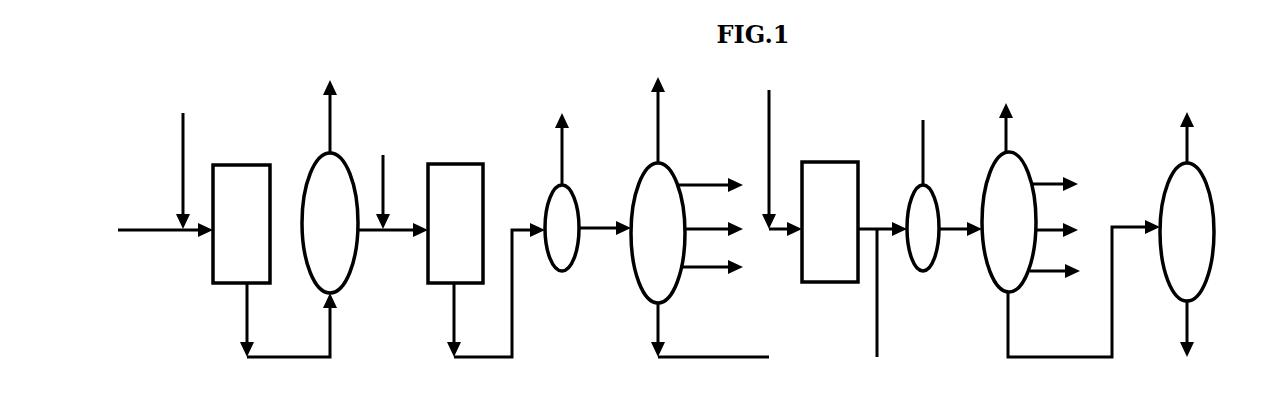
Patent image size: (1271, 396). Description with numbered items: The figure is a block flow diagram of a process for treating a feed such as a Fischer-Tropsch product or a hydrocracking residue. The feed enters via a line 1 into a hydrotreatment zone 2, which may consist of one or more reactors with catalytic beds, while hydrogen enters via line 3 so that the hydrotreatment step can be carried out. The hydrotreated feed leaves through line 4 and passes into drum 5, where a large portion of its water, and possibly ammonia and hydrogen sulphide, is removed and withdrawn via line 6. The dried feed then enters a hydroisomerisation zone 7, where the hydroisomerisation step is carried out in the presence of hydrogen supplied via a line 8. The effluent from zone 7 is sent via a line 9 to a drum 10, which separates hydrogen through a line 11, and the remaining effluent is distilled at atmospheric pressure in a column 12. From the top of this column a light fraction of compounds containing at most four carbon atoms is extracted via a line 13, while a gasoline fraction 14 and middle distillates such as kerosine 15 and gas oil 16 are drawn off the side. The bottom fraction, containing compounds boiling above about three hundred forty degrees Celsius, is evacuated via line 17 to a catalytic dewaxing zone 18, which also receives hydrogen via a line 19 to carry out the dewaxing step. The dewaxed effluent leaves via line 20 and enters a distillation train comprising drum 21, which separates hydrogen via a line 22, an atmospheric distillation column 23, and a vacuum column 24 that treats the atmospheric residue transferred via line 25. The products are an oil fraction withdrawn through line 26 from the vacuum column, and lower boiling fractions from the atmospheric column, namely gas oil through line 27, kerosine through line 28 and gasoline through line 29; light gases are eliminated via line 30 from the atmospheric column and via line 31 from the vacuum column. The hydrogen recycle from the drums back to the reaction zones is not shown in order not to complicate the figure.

The line 1 is at (156, 230).
The hydrotreatment zone 2 is at (241, 224).
The line 3 is at (182, 152).
The line 4 is at (246, 335).
The drum 5 is at (365, 223).
The line 6 is at (330, 140).
The hydroisomerisation zone 7 is at (455, 223).
The line 8 is at (383, 150).
The line 9 is at (453, 336).
The drum 10 is at (588, 228).
The line 11 is at (563, 153).
The column 12 is at (658, 233).
The line 13 is at (657, 138).
The gasoline fraction 14 is at (703, 185).
The kerosine 15 is at (723, 229).
The gas oil 16 is at (712, 267).
The line 17 is at (660, 326).
The catalytic dewaxing zone 18 is at (854, 222).
The line 19 is at (770, 132).
The line 20 is at (876, 337).
The drum 21 is at (944, 228).
The line 22 is at (921, 170).
The atmospheric distillation column 23 is at (1009, 222).
The vacuum column 24 is at (1187, 232).
The line 25 is at (1007, 298).
The line 26 is at (1185, 316).
The line 27 is at (1032, 271).
The line 28 is at (1046, 230).
The line 29 is at (1048, 184).
The line 30 is at (1005, 139).
The line 31 is at (1186, 151).